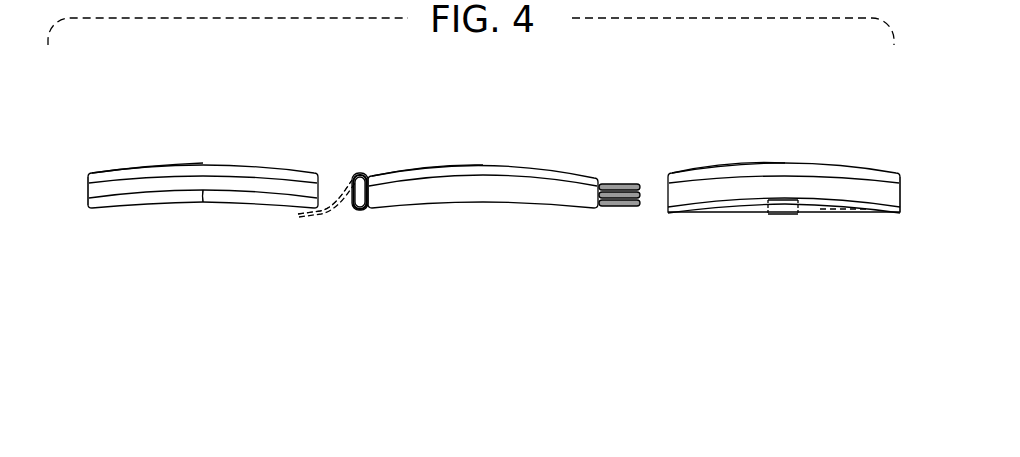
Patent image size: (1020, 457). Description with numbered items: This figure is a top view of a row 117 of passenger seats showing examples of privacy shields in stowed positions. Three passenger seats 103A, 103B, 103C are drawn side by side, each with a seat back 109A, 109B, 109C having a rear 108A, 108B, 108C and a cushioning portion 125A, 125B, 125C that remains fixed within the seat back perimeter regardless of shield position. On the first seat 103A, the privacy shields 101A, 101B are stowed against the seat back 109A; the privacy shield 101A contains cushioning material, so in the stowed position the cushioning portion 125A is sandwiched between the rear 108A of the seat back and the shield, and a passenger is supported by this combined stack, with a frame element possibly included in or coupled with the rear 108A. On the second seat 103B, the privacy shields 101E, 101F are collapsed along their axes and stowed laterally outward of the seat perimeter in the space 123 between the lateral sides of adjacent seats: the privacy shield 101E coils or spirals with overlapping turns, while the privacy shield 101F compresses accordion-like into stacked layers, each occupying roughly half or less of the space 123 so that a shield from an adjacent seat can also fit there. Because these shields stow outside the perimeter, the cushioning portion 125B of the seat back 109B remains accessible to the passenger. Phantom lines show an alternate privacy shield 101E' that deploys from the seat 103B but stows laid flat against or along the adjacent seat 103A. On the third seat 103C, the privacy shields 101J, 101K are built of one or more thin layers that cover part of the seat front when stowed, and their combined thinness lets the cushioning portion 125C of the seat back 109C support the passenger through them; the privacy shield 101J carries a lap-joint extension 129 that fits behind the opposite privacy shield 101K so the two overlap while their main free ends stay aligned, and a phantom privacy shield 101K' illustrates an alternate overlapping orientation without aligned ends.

The row 117 is at (255, 305).
The passenger seat 103A is at (252, 130).
The passenger seat 103B is at (540, 135).
The passenger seat 103C is at (822, 130).
The seat back 109A is at (83, 128).
The seat back 109B is at (480, 135).
The seat back 109C is at (781, 135).
The rear of the seat back 108A is at (118, 175).
The rear of the seat back 108B is at (370, 176).
The rear of the seat back 108C is at (690, 173).
The cushioning portion 125A is at (103, 187).
The cushioning portion 125B is at (522, 185).
The cushioning portion 125C is at (817, 185).
The privacy shield 101A is at (110, 210).
The privacy shield 101B is at (275, 208).
The privacy shield 101E is at (386, 216).
The privacy shield 101E' is at (345, 234).
The privacy shield 101F is at (612, 210).
The privacy shield 101J is at (680, 212).
The privacy shield 101K is at (854, 244).
The privacy shield 101K' is at (827, 259).
The space 123 is at (501, 193).
The lap-joint extension 129 is at (760, 210).